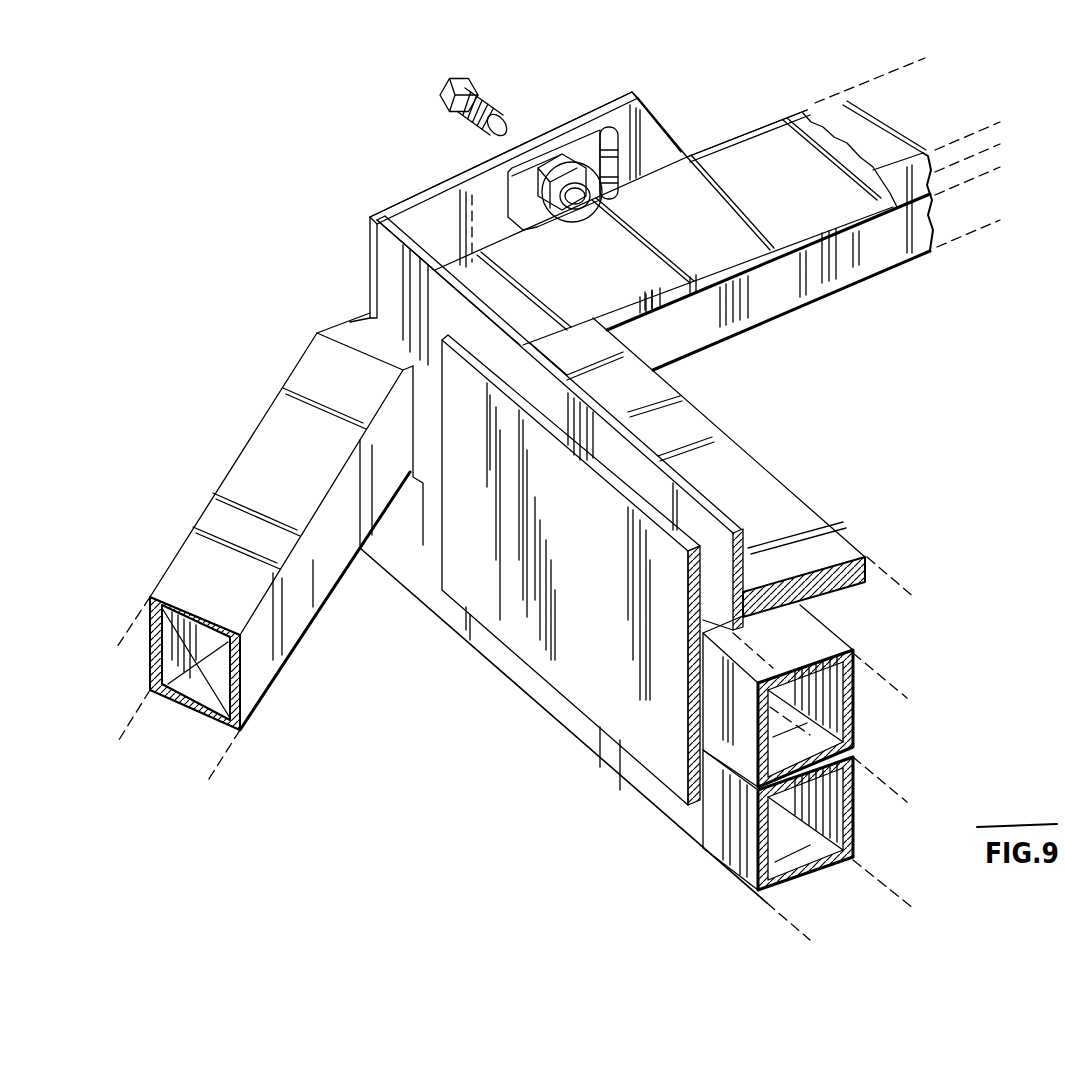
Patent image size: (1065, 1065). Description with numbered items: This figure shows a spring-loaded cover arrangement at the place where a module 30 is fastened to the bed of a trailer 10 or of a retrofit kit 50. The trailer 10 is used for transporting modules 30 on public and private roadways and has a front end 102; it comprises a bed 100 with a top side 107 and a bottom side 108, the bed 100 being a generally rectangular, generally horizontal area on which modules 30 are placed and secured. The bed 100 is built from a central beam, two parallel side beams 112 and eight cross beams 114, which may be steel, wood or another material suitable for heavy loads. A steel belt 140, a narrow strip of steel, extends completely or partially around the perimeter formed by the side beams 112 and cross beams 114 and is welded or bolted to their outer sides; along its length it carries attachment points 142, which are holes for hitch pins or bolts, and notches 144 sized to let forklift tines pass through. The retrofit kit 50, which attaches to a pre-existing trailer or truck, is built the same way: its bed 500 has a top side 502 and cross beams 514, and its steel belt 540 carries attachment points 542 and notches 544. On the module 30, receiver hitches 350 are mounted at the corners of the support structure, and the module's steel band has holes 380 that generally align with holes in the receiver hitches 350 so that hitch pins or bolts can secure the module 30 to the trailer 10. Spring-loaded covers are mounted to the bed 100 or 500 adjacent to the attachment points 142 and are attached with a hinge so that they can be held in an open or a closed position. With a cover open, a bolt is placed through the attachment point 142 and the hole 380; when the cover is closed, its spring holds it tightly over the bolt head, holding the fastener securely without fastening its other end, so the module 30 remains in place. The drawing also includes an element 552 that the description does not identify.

The trailer 10 is at (277, 362).
The module 30 is at (450, 154).
The retrofit kit 50 is at (430, 184).
The bed 100 is at (840, 103).
The front end 102 is at (515, 667).
The top side 107 is at (833, 130).
The bottom side 108 is at (867, 275).
The side beams 112 is at (873, 150).
The cross beams 114 is at (820, 640).
The steel belt 140 is at (582, 658).
The attachment points 142 is at (543, 155).
The notches 144 is at (628, 101).
The receiver hitches 350 is at (733, 847).
The holes 380 is at (599, 132).
The bed 500 is at (485, 283).
The top side 502 is at (770, 205).
The cross beams 514 is at (690, 420).
The steel belt 540 is at (700, 512).
The attachment points 542 is at (547, 155).
The notches 544 is at (710, 152).
The mounting plate 552 is at (508, 212).